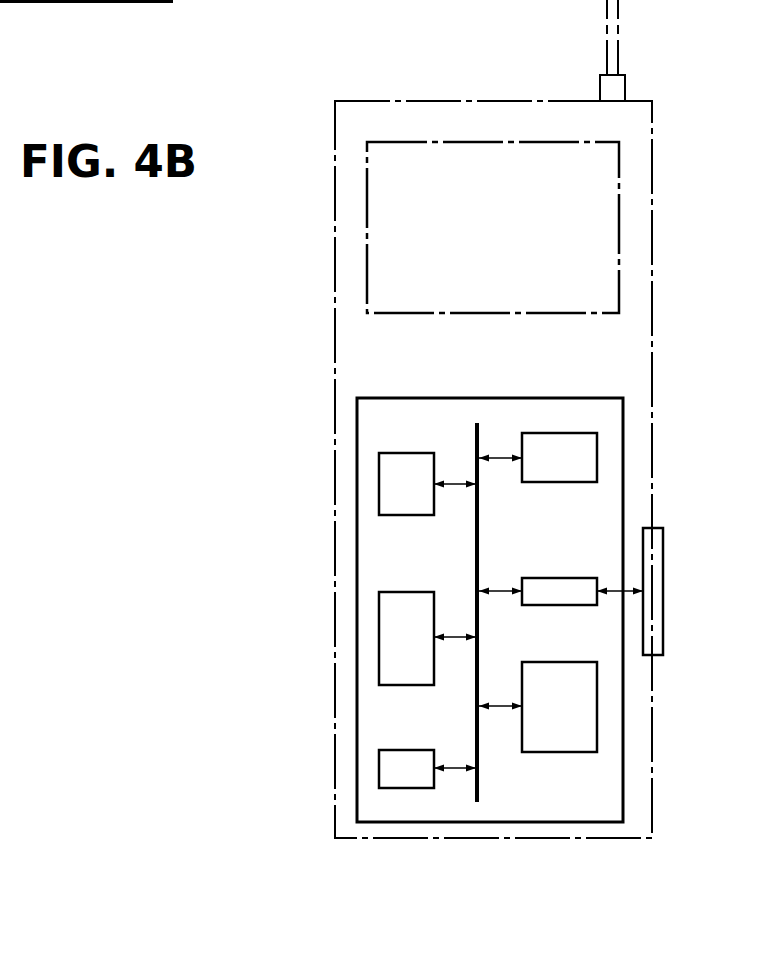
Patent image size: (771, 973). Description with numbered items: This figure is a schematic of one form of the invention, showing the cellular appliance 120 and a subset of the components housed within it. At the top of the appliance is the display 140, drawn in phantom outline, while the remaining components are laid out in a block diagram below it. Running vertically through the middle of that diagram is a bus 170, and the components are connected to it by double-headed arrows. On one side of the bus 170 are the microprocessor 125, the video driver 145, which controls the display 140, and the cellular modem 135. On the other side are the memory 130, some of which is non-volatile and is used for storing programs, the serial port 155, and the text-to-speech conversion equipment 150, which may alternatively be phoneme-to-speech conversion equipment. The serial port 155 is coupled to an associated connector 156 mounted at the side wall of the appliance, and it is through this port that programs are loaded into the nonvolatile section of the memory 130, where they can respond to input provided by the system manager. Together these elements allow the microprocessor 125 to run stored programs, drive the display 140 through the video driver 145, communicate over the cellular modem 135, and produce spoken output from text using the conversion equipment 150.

The cellular appliance 120 is at (288, 318).
The microprocessor 125 is at (415, 453).
The memory 130 is at (547, 483).
The cellular modem 135 is at (415, 750).
The display 140 is at (482, 313).
The video driver 145 is at (415, 592).
The text-to-speech conversion equipment 150 is at (565, 662).
The serial port 155 is at (563, 578).
The connector 156 is at (664, 572).
The bus 170 is at (480, 786).